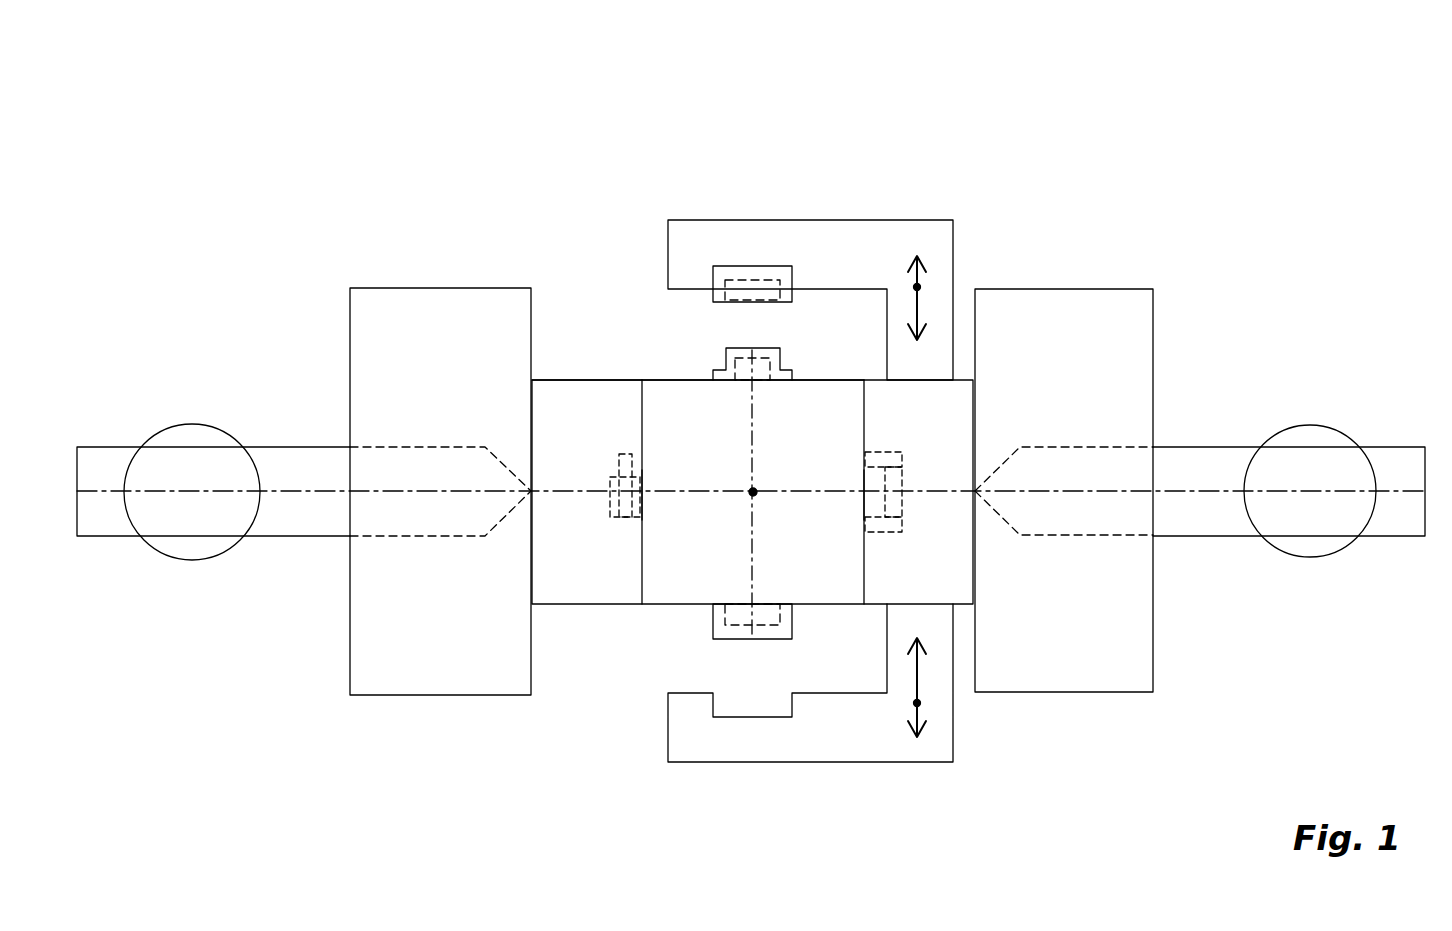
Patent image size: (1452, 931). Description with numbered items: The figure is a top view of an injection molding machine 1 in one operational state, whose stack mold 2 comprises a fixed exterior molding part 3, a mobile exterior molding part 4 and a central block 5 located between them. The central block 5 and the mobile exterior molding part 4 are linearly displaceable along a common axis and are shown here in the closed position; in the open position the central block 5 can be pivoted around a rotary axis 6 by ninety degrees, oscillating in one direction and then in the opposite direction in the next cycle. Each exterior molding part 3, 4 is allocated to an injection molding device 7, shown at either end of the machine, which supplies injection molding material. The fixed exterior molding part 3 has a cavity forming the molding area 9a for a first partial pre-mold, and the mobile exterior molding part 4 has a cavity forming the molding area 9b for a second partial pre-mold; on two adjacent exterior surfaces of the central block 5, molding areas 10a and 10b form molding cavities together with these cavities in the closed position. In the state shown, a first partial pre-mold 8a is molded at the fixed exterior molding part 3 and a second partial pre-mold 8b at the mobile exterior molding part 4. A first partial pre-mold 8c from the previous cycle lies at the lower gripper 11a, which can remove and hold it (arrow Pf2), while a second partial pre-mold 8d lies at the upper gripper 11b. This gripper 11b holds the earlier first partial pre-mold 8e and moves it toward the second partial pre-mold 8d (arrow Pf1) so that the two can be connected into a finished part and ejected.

The injection molding machine 1 is at (1265, 95).
The stack mold 2 is at (560, 208).
The fixed exterior molding part 3 is at (952, 442).
The mobile exterior molding part 4 is at (572, 392).
The central block 5 is at (662, 392).
The rotary axis 6 is at (753, 492).
The injection molding device 7 is at (258, 426).
The first partial pre-mold 8a is at (889, 523).
The second partial pre-mold 8b is at (637, 512).
The first partial pre-mold 8c is at (712, 630).
The second partial pre-mold 8d is at (778, 360).
The first partial pre-mold 8e is at (738, 290).
The molding area 9a is at (897, 468).
The molding area 9b is at (616, 475).
The molding area 10a is at (870, 503).
The molding area 10b is at (637, 487).
The gripper 11a is at (782, 750).
The gripper 11b is at (806, 236).
The arrow Pf1 is at (917, 287).
The arrow Pf2 is at (917, 703).